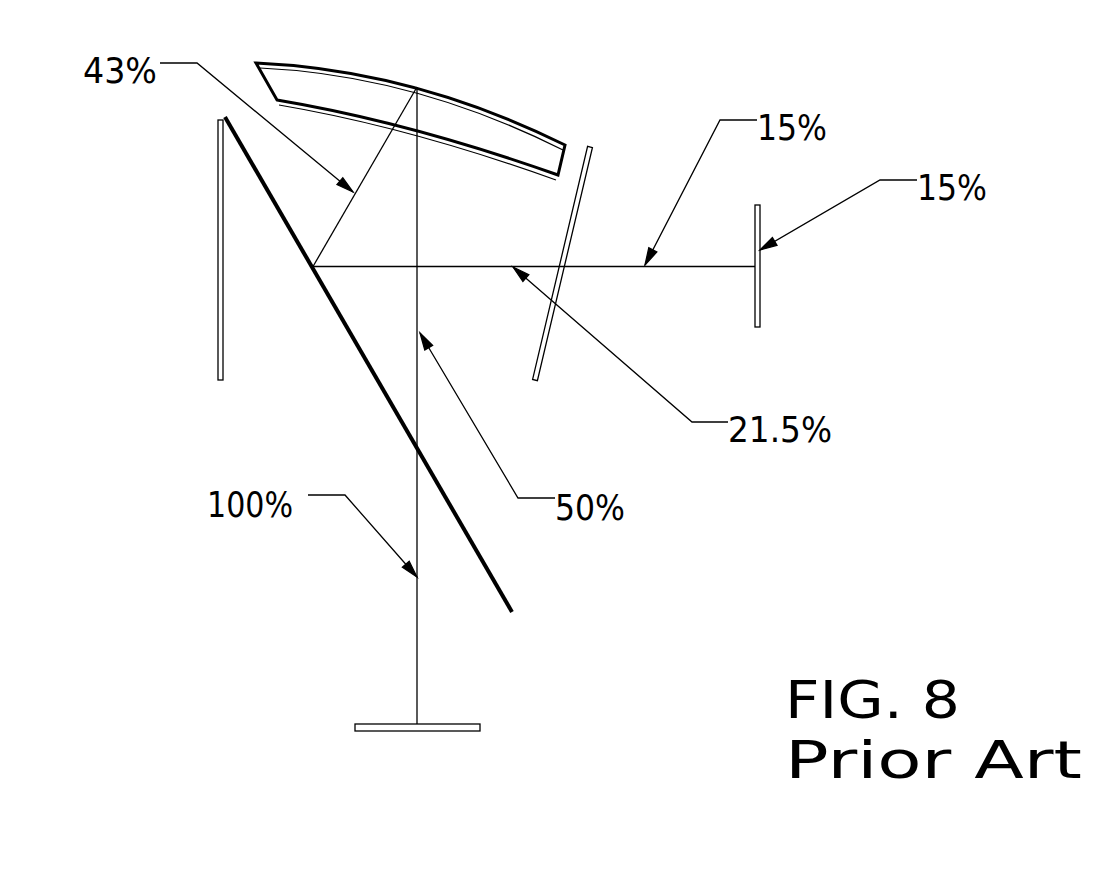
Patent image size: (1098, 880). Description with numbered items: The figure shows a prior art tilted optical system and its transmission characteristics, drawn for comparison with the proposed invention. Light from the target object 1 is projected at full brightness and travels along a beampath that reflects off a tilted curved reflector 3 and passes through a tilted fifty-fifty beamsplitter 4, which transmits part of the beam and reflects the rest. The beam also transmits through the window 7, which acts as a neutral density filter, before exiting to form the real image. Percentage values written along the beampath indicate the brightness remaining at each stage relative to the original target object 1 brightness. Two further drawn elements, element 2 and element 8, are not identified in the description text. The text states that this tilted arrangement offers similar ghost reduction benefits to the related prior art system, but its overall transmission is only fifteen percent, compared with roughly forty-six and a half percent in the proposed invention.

The target object 1 is at (453, 731).
The detector plate 2 is at (760, 315).
The curved reflector 3 is at (503, 105).
The beamsplitter 4 is at (468, 530).
The window 7 is at (537, 380).
The mirror plate 8 is at (218, 240).